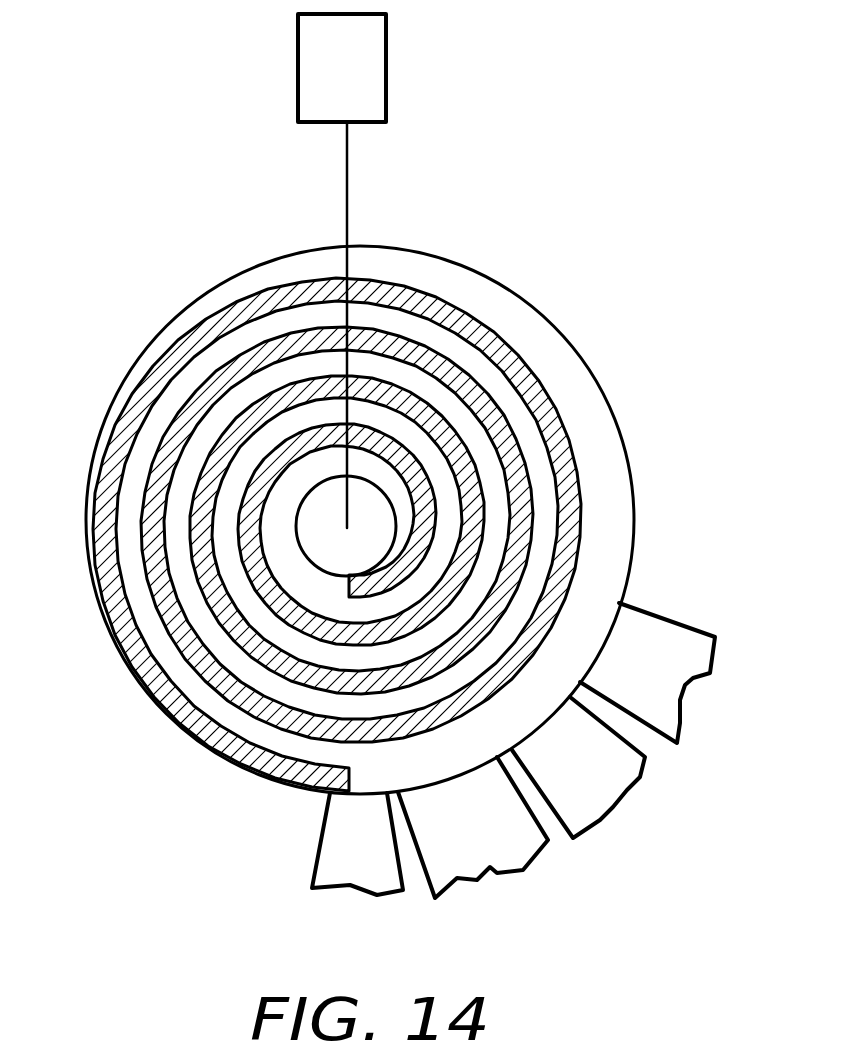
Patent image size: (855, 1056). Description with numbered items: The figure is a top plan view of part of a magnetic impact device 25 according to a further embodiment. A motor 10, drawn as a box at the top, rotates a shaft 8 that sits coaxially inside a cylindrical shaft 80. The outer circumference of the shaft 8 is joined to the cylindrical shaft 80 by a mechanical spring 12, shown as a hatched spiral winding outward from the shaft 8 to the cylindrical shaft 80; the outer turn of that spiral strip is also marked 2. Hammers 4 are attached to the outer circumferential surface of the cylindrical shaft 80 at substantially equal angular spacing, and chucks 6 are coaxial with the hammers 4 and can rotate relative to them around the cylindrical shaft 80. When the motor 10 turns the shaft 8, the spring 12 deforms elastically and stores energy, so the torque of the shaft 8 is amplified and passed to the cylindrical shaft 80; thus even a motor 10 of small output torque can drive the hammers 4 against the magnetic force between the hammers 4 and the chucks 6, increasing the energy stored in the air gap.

The spiral wound strip 2 is at (427, 528).
The hammer 4 is at (333, 857).
The chuck 6 is at (490, 858).
The shaft 8 is at (328, 527).
The motor 10 is at (386, 57).
The mechanical spring 12 is at (572, 484).
The magnetic impact device 25 is at (427, 528).
The cylindrical shaft 80 is at (535, 312).